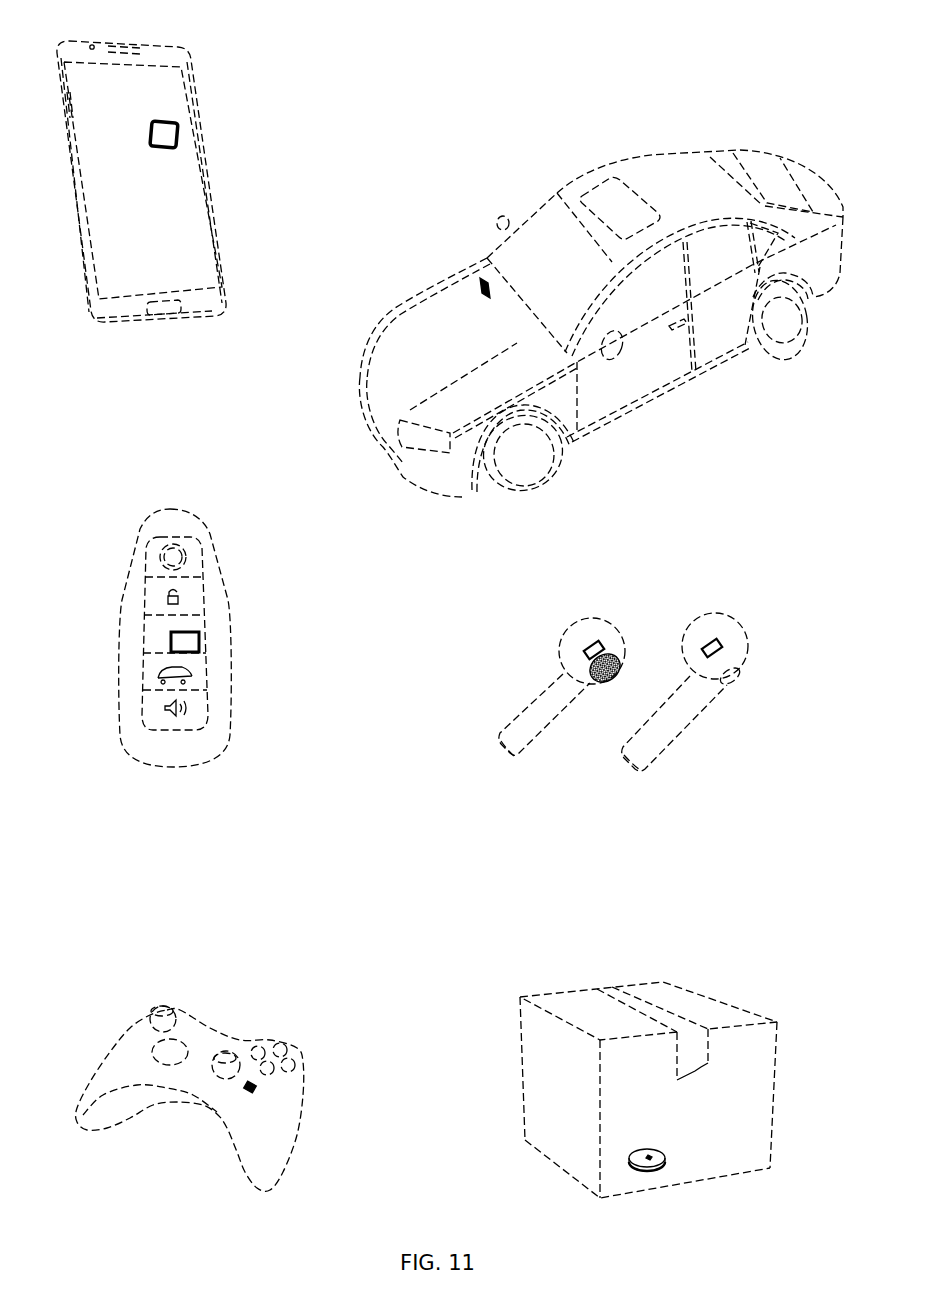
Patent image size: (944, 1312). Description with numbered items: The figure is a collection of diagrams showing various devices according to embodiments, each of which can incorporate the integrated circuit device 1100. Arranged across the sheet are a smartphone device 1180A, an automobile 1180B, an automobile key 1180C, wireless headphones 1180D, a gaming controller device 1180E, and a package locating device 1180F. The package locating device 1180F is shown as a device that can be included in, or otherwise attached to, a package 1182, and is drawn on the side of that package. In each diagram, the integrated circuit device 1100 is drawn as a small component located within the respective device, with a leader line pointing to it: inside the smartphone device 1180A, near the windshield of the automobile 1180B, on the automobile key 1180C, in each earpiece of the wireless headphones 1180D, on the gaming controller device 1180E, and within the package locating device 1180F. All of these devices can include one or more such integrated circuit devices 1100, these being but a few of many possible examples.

The integrated circuit device 1100 is at (168, 135).
The smartphone device 1180A is at (250, 72).
The automobile 1180B is at (527, 150).
The automobile key 1180C is at (230, 510).
The wireless headphones 1180D is at (556, 592).
The gaming controller device 1180E is at (264, 1018).
The package locating device 1180F is at (674, 1144).
The package 1182 is at (577, 1002).